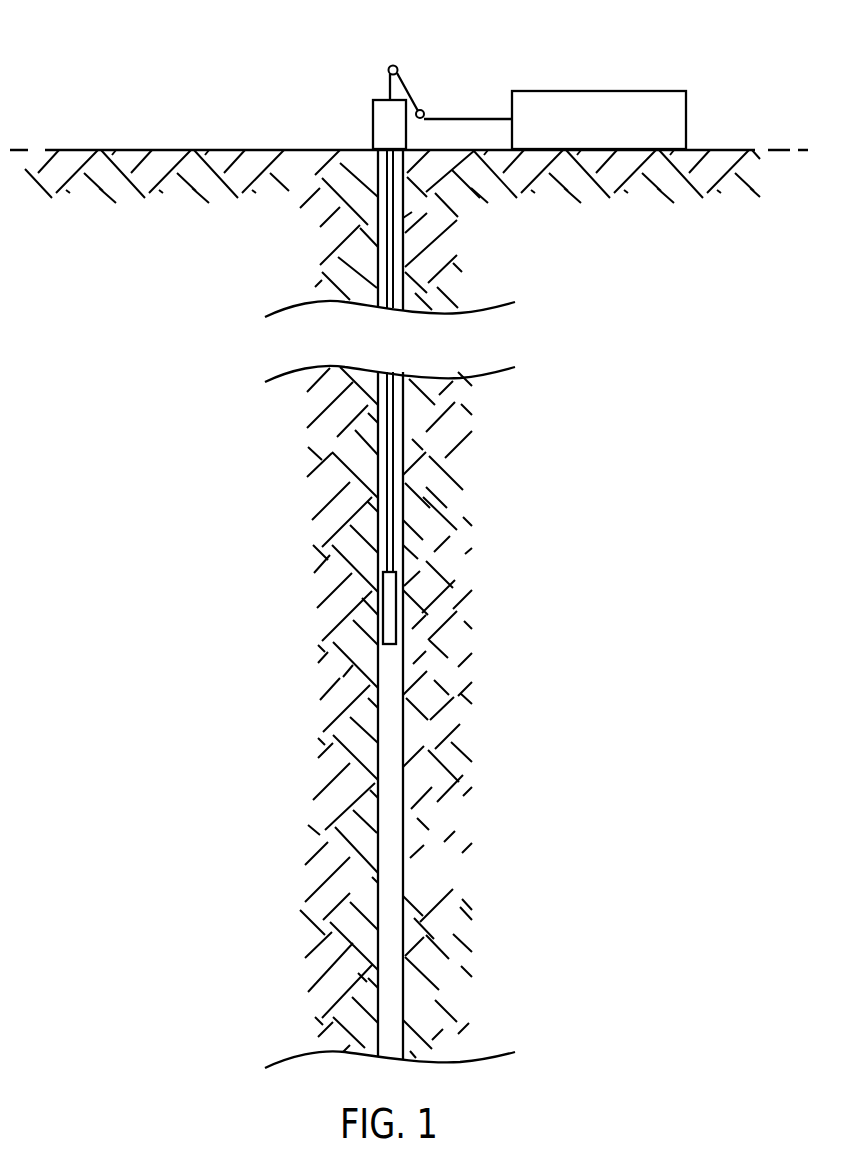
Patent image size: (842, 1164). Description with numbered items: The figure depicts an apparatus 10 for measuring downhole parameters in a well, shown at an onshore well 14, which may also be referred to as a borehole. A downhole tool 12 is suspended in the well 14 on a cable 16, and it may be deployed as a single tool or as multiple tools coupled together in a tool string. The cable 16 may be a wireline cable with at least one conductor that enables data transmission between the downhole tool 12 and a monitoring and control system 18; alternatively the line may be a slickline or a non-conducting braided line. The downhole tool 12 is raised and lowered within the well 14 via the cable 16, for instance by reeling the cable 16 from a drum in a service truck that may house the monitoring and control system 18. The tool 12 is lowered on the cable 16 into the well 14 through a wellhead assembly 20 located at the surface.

The apparatus 10 is at (180, 49).
The downhole tool 12 is at (397, 590).
The well 14 is at (380, 757).
The cable 16 is at (387, 75).
The monitoring and control system 18 is at (687, 121).
The wellhead assembly 20 is at (373, 122).